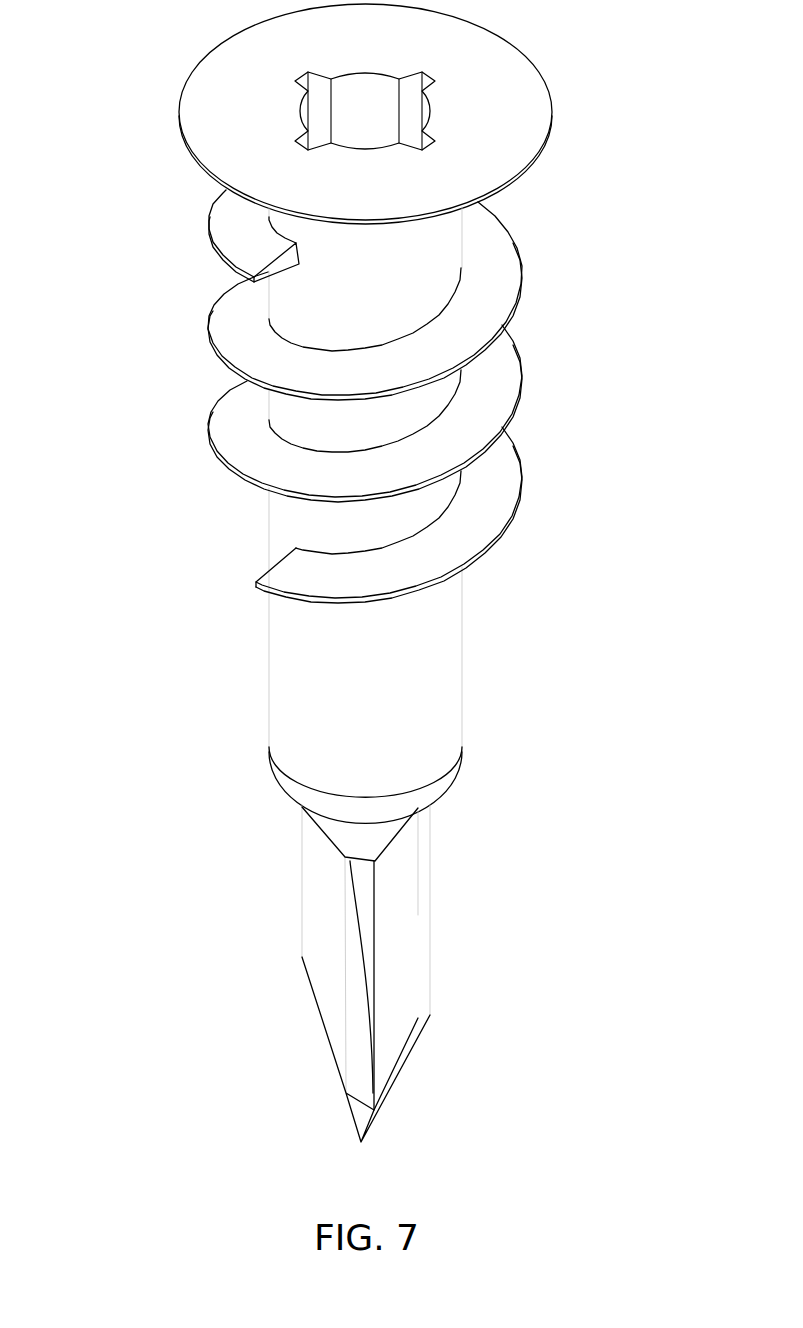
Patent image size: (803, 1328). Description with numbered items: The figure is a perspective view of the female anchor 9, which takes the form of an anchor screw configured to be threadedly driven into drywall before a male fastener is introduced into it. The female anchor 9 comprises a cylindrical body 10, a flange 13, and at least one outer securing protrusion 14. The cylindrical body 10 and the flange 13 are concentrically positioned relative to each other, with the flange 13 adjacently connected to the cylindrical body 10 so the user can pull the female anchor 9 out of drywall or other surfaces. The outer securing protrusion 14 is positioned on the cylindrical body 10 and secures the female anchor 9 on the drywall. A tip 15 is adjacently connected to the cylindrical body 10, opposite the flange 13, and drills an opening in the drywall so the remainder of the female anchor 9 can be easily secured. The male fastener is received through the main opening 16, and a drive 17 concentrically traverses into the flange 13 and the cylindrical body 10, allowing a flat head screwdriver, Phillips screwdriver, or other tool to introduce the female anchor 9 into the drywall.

The female anchor 9 is at (128, 553).
The cylindrical body 10 is at (448, 682).
The flange 13 is at (547, 113).
The outer securing protrusion 14 is at (222, 442).
The tip 15 is at (308, 942).
The main opening 16 is at (364, 86).
The drive 17 is at (303, 137).